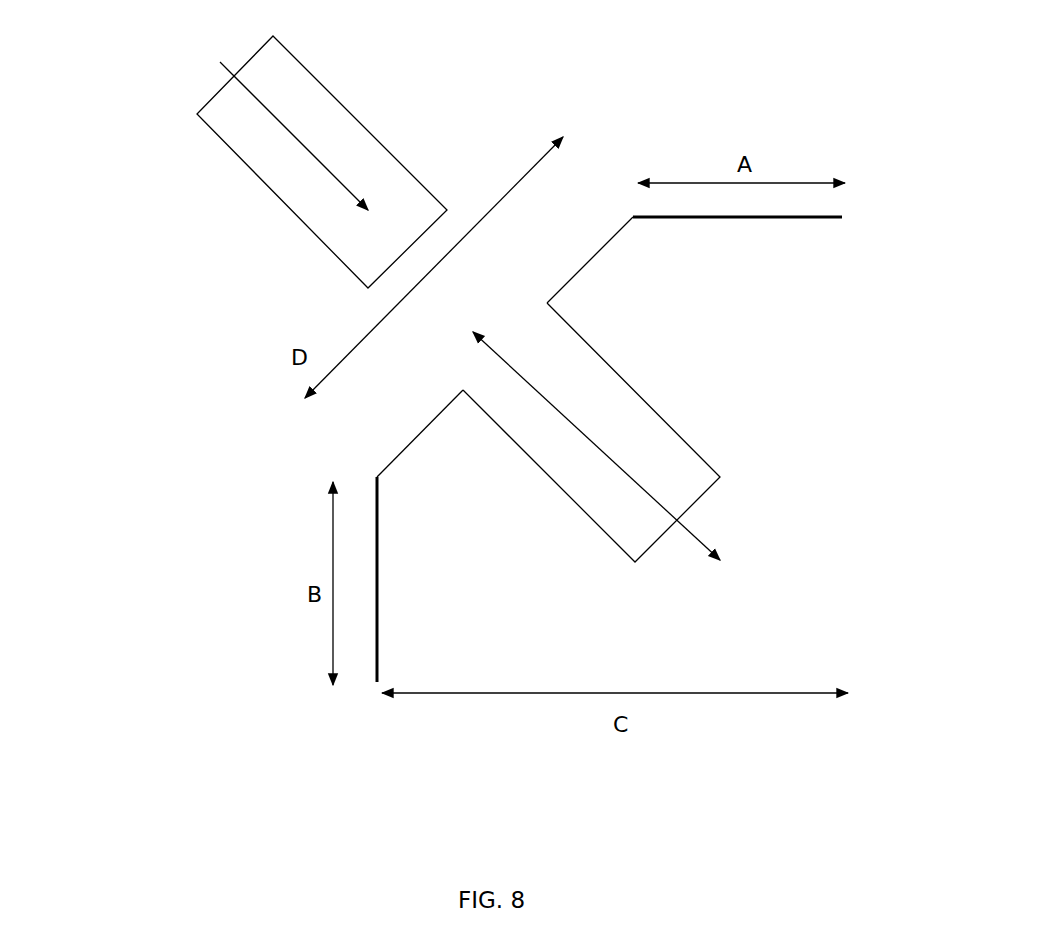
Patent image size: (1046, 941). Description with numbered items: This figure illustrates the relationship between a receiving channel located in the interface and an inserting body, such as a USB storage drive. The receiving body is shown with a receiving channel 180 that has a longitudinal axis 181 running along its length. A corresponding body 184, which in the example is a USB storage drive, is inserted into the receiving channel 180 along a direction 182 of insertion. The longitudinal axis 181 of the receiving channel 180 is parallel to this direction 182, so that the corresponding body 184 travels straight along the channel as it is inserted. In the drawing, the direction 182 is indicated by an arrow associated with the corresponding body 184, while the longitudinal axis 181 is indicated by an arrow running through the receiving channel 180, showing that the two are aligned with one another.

The receiving channel 180 is at (607, 363).
The longitudinal axis 181 is at (542, 393).
The direction 182 is at (250, 92).
The corresponding body 184 is at (287, 210).